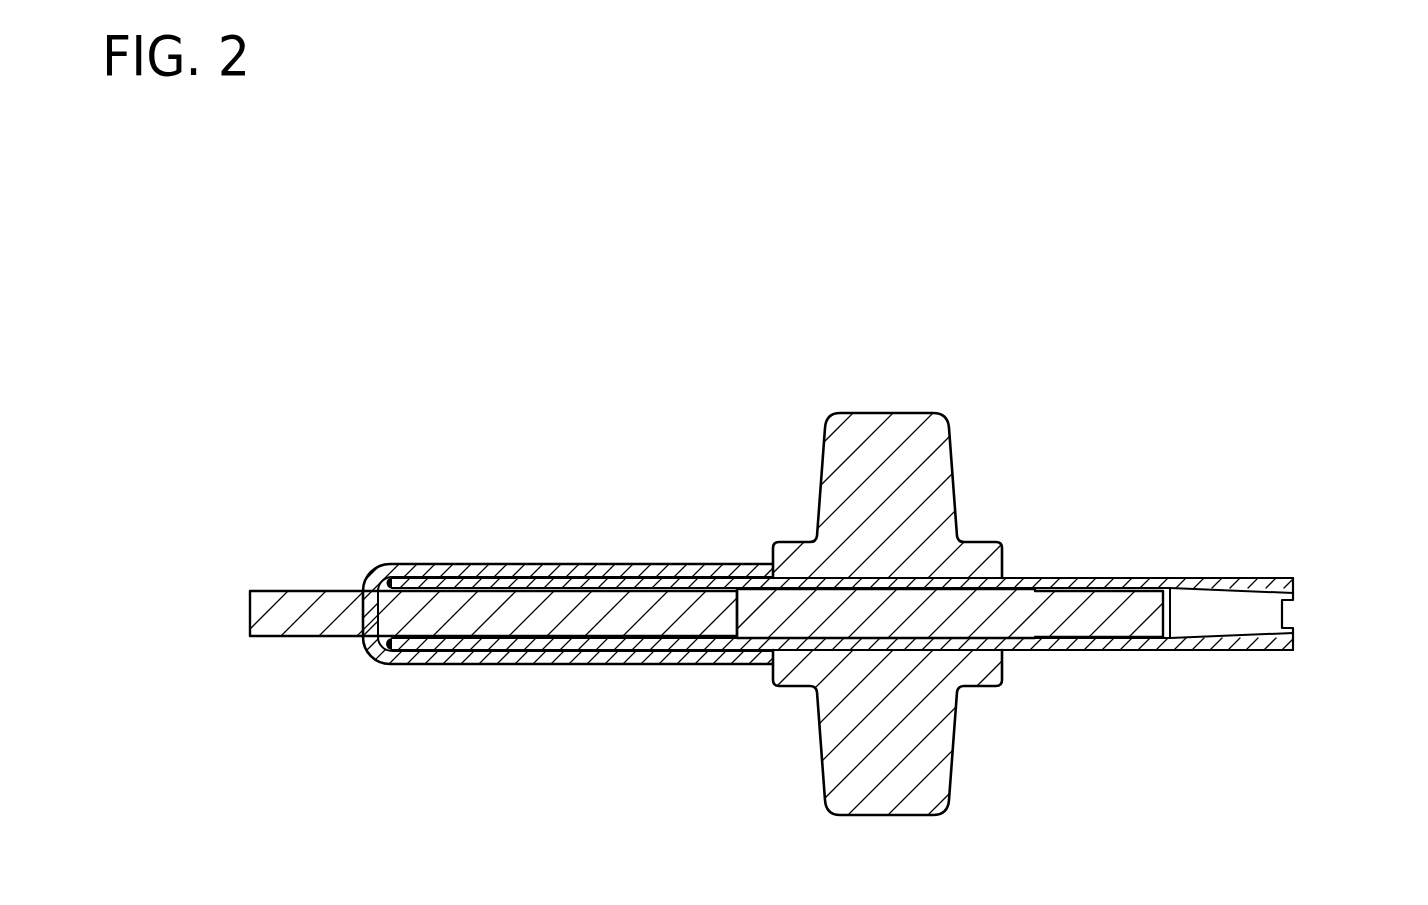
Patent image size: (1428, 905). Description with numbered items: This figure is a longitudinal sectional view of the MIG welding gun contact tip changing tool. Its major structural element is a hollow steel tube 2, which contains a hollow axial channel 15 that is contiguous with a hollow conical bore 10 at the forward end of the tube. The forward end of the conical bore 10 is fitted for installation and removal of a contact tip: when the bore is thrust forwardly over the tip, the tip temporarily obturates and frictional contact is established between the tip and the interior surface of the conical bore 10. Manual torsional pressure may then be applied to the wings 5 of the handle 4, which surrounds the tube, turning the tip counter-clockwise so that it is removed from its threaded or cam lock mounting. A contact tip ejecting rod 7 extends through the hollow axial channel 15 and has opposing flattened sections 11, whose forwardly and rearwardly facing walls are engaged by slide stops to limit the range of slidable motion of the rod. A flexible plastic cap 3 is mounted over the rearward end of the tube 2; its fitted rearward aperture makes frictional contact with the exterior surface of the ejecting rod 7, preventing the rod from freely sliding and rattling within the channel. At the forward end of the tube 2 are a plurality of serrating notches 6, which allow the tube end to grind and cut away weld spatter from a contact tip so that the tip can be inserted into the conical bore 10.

The hollow steel tube 2 is at (1084, 627).
The flexible plastic cap 3 is at (415, 655).
The handle 4 is at (790, 667).
The wings 5 is at (870, 651).
The serrating notches 6 is at (1288, 607).
The contact tip ejecting rod 7 is at (270, 618).
The hollow conical bore 10 is at (1238, 602).
The flattened sections 11 is at (1018, 605).
The hollow axial channel 15 is at (556, 647).